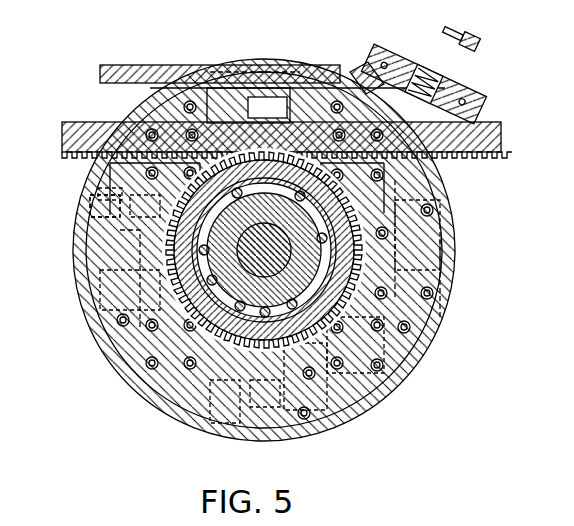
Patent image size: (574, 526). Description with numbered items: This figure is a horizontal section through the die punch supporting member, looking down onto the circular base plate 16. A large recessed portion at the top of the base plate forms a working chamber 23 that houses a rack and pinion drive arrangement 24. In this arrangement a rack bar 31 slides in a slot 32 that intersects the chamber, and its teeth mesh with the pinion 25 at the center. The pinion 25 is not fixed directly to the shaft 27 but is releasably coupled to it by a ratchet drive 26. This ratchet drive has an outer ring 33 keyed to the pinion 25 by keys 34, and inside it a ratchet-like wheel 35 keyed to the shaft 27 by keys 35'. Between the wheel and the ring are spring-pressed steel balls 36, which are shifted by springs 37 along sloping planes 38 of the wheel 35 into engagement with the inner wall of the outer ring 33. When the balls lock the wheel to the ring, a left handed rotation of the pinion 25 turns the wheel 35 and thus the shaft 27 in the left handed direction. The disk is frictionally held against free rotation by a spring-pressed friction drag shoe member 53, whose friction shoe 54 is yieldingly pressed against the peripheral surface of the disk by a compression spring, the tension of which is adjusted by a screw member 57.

The base plate 16 is at (76, 272).
The working chamber 23 is at (325, 278).
The rack and pinion drive arrangement 24 is at (463, 164).
The pinion 25 is at (322, 198).
The ratchet drive 26 is at (327, 437).
The shaft 27 is at (110, 223).
The rack bar 31 is at (65, 150).
The slot 32 is at (110, 166).
The outer ring 33 is at (207, 273).
The keys 34 is at (472, 243).
The ratchet-like wheel 35 is at (128, 306).
The keys 35' is at (86, 194).
The spring-pressed steel balls 36 is at (216, 310).
The springs 37 is at (218, 322).
The sloping planes 38 is at (318, 328).
The friction drag shoe member 53 is at (476, 83).
The friction shoe 54 is at (354, 72).
The screw member 57 is at (460, 40).